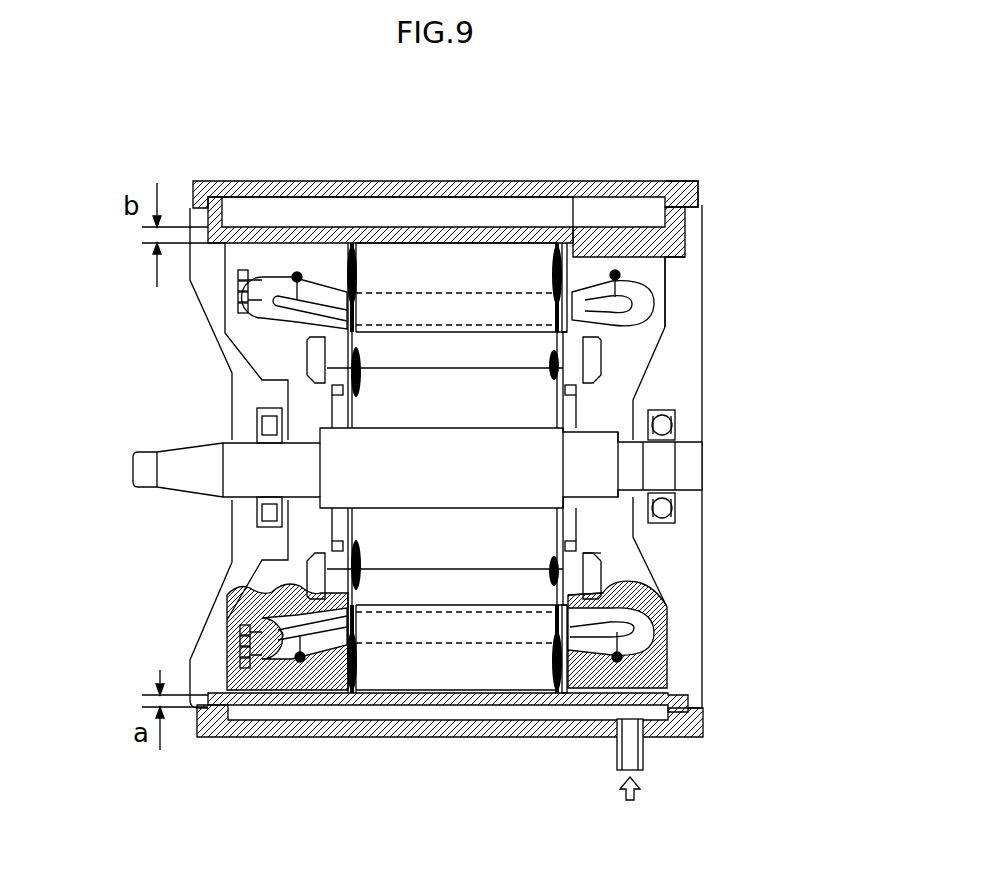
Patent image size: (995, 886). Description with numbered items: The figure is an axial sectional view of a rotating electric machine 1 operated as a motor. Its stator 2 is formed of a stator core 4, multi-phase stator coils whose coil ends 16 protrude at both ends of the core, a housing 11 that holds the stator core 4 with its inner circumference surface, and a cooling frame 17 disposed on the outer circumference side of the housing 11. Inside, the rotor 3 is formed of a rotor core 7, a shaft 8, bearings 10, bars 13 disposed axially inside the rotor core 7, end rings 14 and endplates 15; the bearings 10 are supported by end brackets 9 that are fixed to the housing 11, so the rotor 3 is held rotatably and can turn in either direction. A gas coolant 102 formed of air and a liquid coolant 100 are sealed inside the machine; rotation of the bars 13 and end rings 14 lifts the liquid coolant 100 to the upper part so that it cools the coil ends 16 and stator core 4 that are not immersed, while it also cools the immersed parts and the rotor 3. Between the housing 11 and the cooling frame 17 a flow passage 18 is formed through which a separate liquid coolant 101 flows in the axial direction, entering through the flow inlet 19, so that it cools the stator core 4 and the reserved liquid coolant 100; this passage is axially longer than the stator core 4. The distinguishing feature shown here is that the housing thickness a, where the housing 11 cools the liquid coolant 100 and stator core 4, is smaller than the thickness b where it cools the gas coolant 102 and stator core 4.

The rotating electric machine 1 is at (803, 105).
The stator 2 is at (383, 250).
The rotor 3 is at (445, 605).
The stator core 4 is at (438, 272).
The rotor core 7 is at (413, 537).
The shaft 8 is at (377, 480).
The end bracket 9 is at (680, 277).
The bearing 10 is at (673, 418).
The housing 11 is at (233, 200).
The bar 13 is at (570, 582).
The end ring 14 is at (597, 573).
The endplate 15 is at (578, 243).
The coil end 16 is at (310, 297).
The cooling frame 17 is at (517, 210).
The flow passage 18 is at (705, 720).
The flow inlet 19 is at (625, 745).
The liquid coolant 100 is at (234, 677).
The liquid coolant 101 is at (700, 190).
The gas coolant 102 is at (643, 332).